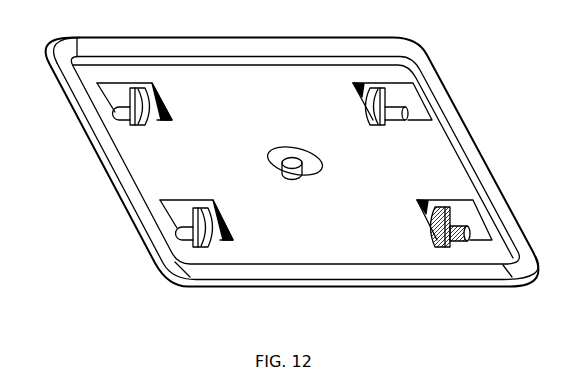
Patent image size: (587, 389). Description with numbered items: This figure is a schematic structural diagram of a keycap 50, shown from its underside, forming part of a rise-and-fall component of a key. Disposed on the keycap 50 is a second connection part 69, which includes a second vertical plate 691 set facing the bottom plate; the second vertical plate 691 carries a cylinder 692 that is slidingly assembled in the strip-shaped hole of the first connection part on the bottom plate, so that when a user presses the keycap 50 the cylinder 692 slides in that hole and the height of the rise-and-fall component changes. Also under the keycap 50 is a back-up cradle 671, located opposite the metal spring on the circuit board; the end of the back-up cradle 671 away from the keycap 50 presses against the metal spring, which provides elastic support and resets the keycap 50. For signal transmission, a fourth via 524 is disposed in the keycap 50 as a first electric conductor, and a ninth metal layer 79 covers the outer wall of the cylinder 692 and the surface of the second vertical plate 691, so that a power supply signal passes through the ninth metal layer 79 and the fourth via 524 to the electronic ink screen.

The keycap 50 is at (100, 197).
The back-up cradle 671 is at (285, 180).
The second connection part 69 is at (392, 101).
The second vertical plate 691 is at (374, 123).
The cylinder 692 is at (393, 108).
The fourth via 524 is at (473, 222).
The ninth metal layer 79 is at (453, 245).